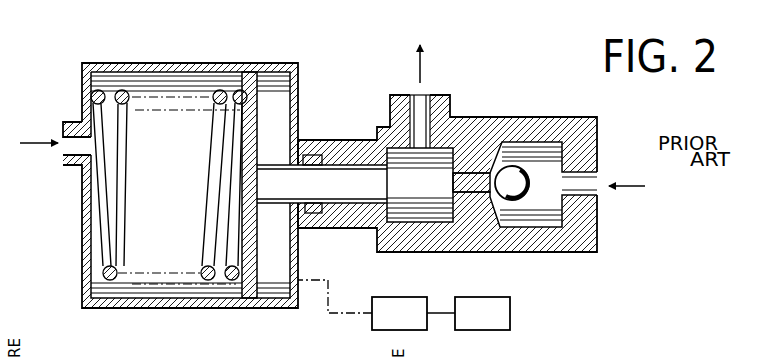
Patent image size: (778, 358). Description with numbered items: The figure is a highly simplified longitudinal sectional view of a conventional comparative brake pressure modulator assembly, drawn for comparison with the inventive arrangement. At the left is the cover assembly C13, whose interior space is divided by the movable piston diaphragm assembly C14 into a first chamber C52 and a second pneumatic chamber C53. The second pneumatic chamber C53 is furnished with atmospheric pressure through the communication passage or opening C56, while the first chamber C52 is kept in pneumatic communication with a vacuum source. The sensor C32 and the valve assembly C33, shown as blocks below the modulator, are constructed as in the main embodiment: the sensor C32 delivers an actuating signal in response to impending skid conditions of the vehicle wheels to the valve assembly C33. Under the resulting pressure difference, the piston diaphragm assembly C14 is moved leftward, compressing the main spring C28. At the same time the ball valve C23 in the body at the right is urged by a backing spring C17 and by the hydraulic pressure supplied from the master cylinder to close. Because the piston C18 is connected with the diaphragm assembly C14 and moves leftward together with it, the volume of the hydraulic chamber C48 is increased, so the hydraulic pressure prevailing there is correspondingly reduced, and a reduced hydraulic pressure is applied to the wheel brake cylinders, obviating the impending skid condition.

The cover assembly C13 is at (178, 68).
The movable piston diaphragm assembly C14 is at (252, 109).
The piston C18 is at (344, 175).
The hydraulic chamber C48 is at (447, 135).
The backing spring C17 is at (547, 140).
The main spring C28 is at (122, 181).
The second pneumatic chamber C53 is at (285, 253).
The first chamber C52 is at (157, 248).
The communication passage or opening C56 is at (299, 290).
The valve assembly C33 is at (400, 310).
The sensor C32 is at (482, 310).
The ball valve C23 is at (520, 200).